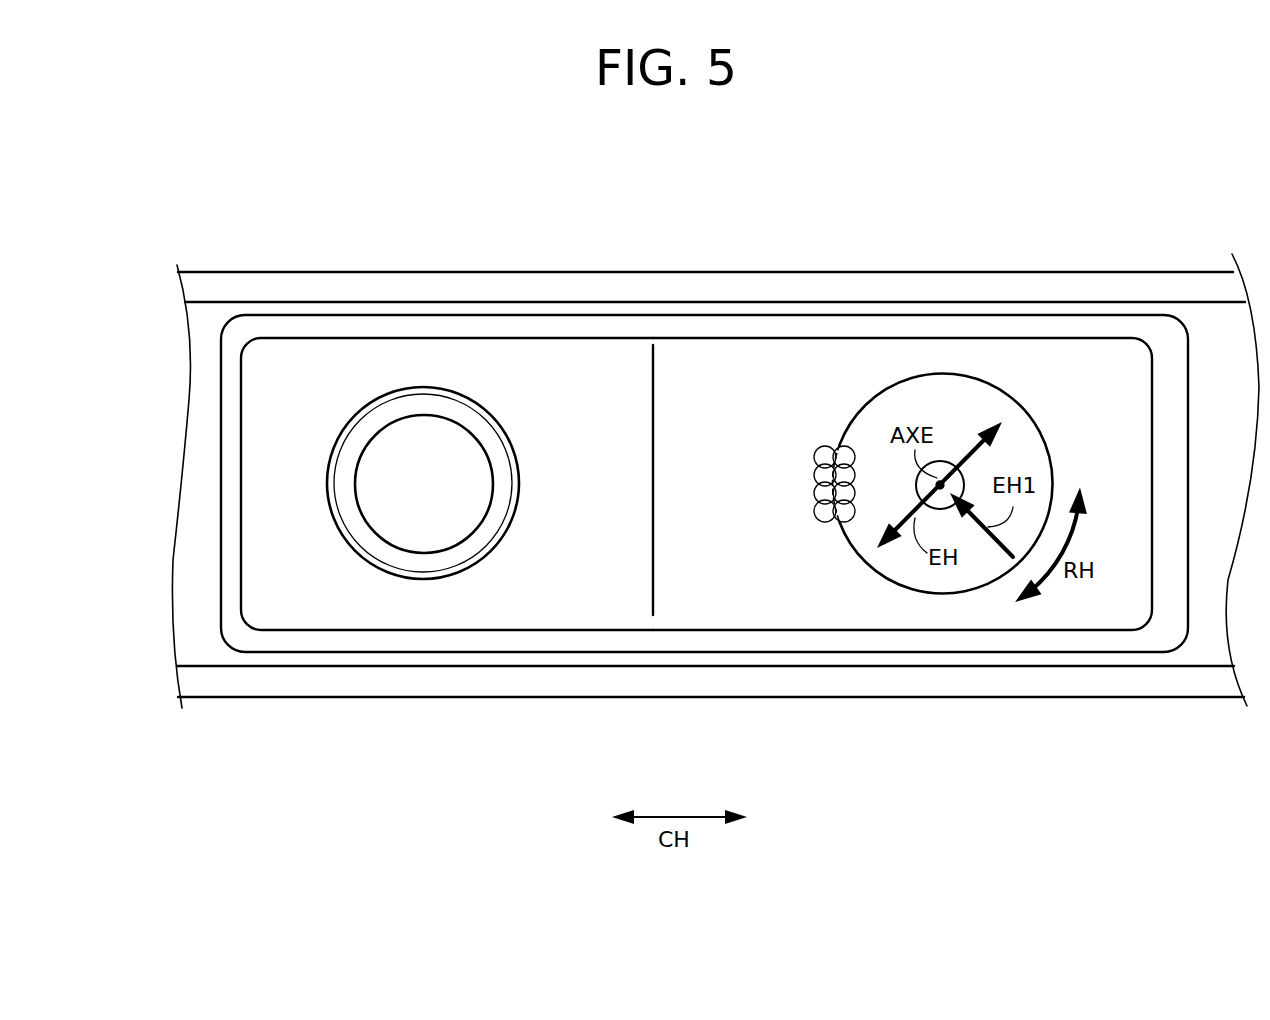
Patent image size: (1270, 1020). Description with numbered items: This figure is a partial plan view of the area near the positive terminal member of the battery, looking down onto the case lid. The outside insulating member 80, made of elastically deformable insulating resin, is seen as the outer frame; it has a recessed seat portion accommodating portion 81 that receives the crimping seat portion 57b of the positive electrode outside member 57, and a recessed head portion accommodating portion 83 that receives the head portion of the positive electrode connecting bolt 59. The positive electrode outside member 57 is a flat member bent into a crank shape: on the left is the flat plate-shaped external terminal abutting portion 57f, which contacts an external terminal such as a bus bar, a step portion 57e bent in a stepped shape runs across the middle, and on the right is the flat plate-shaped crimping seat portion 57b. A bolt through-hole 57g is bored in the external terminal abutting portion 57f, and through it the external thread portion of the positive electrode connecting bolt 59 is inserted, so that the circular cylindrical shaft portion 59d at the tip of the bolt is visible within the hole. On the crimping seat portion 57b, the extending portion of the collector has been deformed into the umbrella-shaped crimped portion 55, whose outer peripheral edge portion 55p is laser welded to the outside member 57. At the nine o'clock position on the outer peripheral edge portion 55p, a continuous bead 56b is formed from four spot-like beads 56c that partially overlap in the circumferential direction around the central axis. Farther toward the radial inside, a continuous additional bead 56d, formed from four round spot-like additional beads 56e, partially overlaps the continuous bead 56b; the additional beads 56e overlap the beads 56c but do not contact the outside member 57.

The outside insulating member 80 is at (715, 452).
The seat portion accommodating portion 81 is at (1167, 347).
The head portion accommodating portion 83 is at (335, 642).
The positive electrode outside member 57 is at (696, 466).
The external terminal abutting portion 57f is at (316, 366).
The crimping seat portion 57b is at (692, 365).
The step portion 57e is at (645, 440).
The bolt through-hole 57g is at (513, 503).
The positive electrode connecting bolt 59 is at (423, 368).
The shaft portion 59d is at (437, 407).
The crimped portion 55 is at (955, 405).
The outer peripheral edge portion 55p is at (873, 412).
The additional beads 56e is at (842, 447).
The continuous additional bead 56d is at (772, 607).
The spot-like beads 56c is at (825, 517).
The continuous bead 56b is at (849, 625).